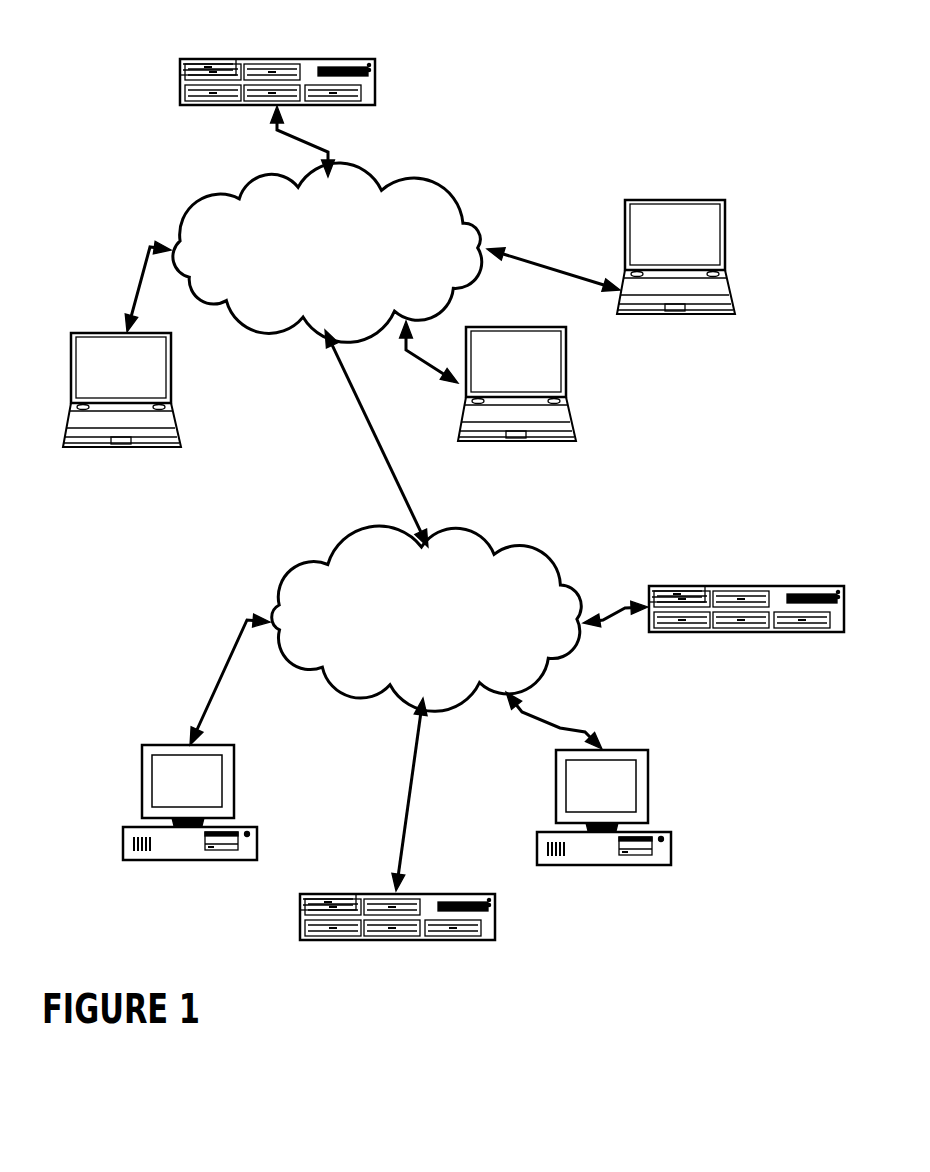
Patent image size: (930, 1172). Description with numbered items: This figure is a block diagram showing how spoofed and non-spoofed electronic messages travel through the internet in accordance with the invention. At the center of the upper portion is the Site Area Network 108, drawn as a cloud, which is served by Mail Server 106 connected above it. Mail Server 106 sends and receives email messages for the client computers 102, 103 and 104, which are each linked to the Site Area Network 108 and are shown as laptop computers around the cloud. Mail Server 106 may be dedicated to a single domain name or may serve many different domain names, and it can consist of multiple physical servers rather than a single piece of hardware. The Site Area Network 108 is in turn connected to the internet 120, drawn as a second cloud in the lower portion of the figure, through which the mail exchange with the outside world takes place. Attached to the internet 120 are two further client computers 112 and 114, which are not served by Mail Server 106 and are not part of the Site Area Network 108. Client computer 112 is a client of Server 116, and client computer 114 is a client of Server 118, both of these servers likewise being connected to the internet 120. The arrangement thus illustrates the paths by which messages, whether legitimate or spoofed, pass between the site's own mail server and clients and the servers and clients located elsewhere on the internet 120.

The client computer 102 is at (120, 448).
The client computer 103 is at (710, 315).
The client computer 104 is at (515, 443).
The mail server 106 is at (276, 59).
The site area network 108 is at (327, 252).
The client computer 112 is at (168, 860).
The client computer 114 is at (653, 866).
The server 116 is at (419, 941).
The server 118 is at (817, 632).
The internet 120 is at (427, 618).